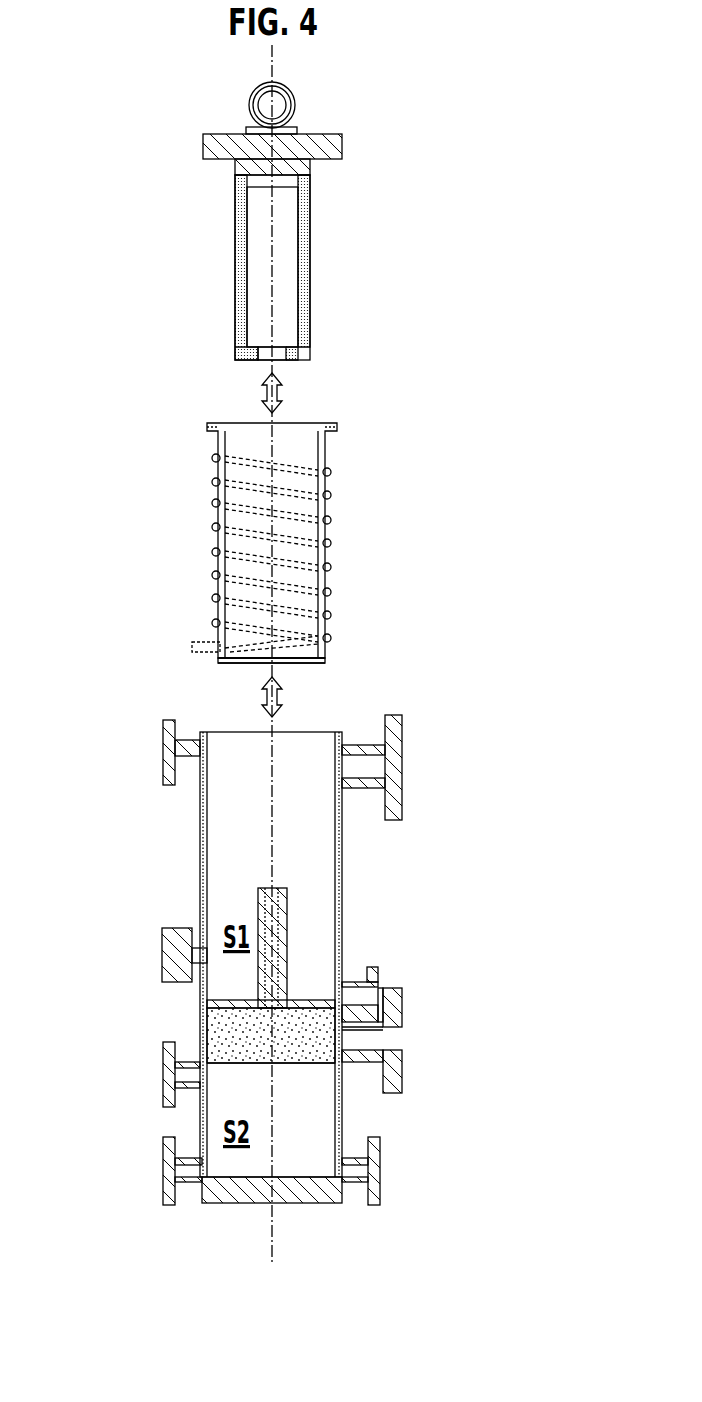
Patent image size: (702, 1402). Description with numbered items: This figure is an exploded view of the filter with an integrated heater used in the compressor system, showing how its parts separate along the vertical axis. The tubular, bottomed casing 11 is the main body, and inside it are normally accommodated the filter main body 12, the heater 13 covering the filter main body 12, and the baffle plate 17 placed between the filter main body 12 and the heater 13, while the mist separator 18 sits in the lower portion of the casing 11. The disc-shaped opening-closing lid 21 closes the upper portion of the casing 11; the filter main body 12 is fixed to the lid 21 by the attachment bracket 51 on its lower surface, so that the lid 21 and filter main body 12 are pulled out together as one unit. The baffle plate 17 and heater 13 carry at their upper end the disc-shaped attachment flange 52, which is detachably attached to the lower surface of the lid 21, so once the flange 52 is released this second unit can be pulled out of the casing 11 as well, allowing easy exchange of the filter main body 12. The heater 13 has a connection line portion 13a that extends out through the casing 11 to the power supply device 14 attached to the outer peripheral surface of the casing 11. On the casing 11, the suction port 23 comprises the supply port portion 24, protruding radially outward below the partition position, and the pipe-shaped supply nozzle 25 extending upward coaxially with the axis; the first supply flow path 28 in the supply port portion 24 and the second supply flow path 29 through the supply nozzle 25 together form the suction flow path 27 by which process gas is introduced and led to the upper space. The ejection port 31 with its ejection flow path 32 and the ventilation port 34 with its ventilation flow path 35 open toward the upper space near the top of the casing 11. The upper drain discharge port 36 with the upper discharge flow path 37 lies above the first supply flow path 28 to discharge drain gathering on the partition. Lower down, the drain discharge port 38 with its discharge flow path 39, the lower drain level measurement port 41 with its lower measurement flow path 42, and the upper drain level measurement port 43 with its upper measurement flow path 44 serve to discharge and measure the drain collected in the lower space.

The casing 11 is at (342, 866).
The filter main body 12 is at (312, 262).
The heater 13 is at (328, 617).
The connection line portion 13a is at (205, 640).
The power supply device 14 is at (177, 965).
The baffle plate 17 is at (326, 658).
The mist separator 18 is at (212, 1030).
The opening-closing lid 21 is at (333, 150).
The suction port 23 is at (436, 970).
The supply port portion 24 is at (434, 1010).
The supply nozzle 25 is at (286, 965).
The suction flow path 27 is at (375, 1062).
The first supply flow path 28 is at (392, 1030).
The second supply flow path 29 is at (270, 1015).
The ejection port 31 is at (402, 730).
The ejection flow path 32 is at (385, 770).
The ventilation port 34 is at (170, 728).
The ventilation flow path 35 is at (182, 750).
The upper drain discharge port 36 is at (373, 975).
The upper discharge flow path 37 is at (381, 992).
The drain discharge port 38 is at (380, 1197).
The discharge flow path 39 is at (380, 1170).
The lower drain level measurement port 41 is at (168, 1195).
The lower measurement flow path 42 is at (180, 1170).
The upper drain level measurement port 43 is at (178, 1085).
The upper measurement flow path 44 is at (170, 1065).
The attachment bracket 51 is at (300, 168).
The attachment flange 52 is at (337, 428).